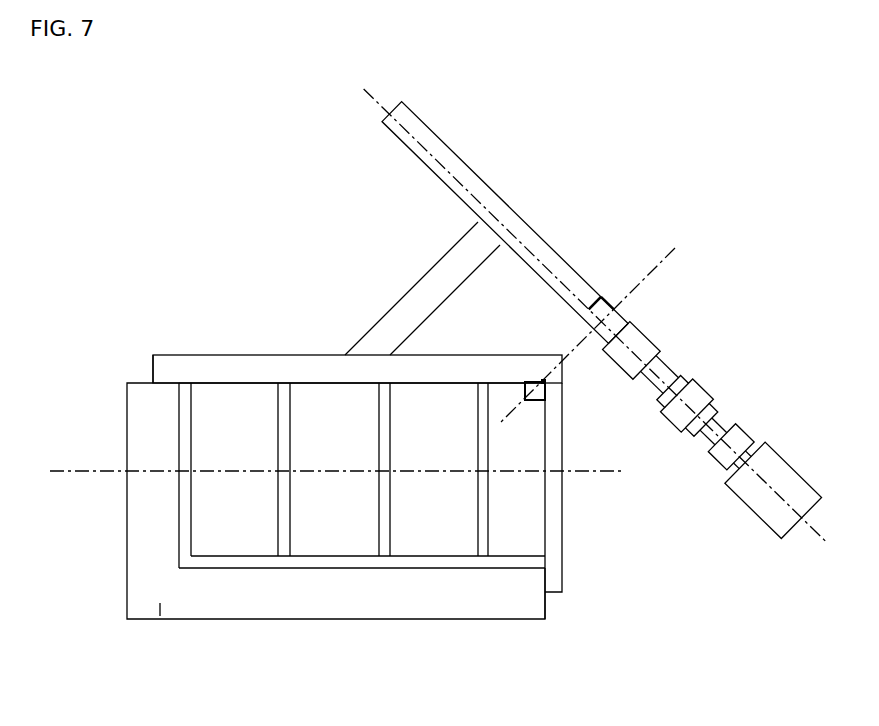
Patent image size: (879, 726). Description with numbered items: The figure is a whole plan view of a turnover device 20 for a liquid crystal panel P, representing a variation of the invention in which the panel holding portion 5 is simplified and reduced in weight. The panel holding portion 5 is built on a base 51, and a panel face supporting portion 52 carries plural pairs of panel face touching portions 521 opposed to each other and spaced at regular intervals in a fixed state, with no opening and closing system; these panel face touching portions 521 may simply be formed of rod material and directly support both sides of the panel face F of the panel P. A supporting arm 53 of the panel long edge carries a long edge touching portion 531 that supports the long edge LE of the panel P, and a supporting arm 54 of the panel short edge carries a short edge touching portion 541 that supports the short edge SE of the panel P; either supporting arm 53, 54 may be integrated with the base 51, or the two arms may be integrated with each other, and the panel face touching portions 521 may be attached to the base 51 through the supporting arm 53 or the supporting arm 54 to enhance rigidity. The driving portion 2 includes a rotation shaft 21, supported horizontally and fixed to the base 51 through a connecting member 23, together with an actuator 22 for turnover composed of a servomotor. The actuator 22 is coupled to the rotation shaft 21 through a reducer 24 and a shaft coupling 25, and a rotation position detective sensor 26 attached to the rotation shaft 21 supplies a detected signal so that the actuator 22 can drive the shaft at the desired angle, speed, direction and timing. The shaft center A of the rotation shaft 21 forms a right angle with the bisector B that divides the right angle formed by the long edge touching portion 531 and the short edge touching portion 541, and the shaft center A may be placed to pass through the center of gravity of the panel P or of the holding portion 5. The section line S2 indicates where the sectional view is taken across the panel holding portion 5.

The turnover device 20 is at (212, 217).
The driving portion 2 is at (527, 177).
The rotation shaft 21 is at (505, 223).
The actuator for turnover 22 is at (773, 490).
The connecting member 23 is at (420, 290).
The reducer 24 is at (731, 447).
The shaft coupling 25 is at (687, 405).
The rotation position detective sensor 26 is at (632, 351).
The panel holding portion 5 is at (218, 305).
The base 51 is at (210, 355).
The panel face supporting portion 52 is at (176, 445).
The panel face touching portions 521 is at (191, 497).
The supporting arm of panel long edge 53 is at (152, 377).
The long edge touching portion 531 is at (163, 387).
The supporting arm of panel short edge 54 is at (555, 587).
The short edge touching portion 541 is at (543, 575).
The shaft center A is at (596, 316).
The bisector B is at (643, 278).
The short edge SE is at (545, 435).
The long edge LE is at (220, 380).
The liquid crystal panel P is at (127, 587).
The panel face F is at (158, 622).
The section line S2 is at (61, 473).